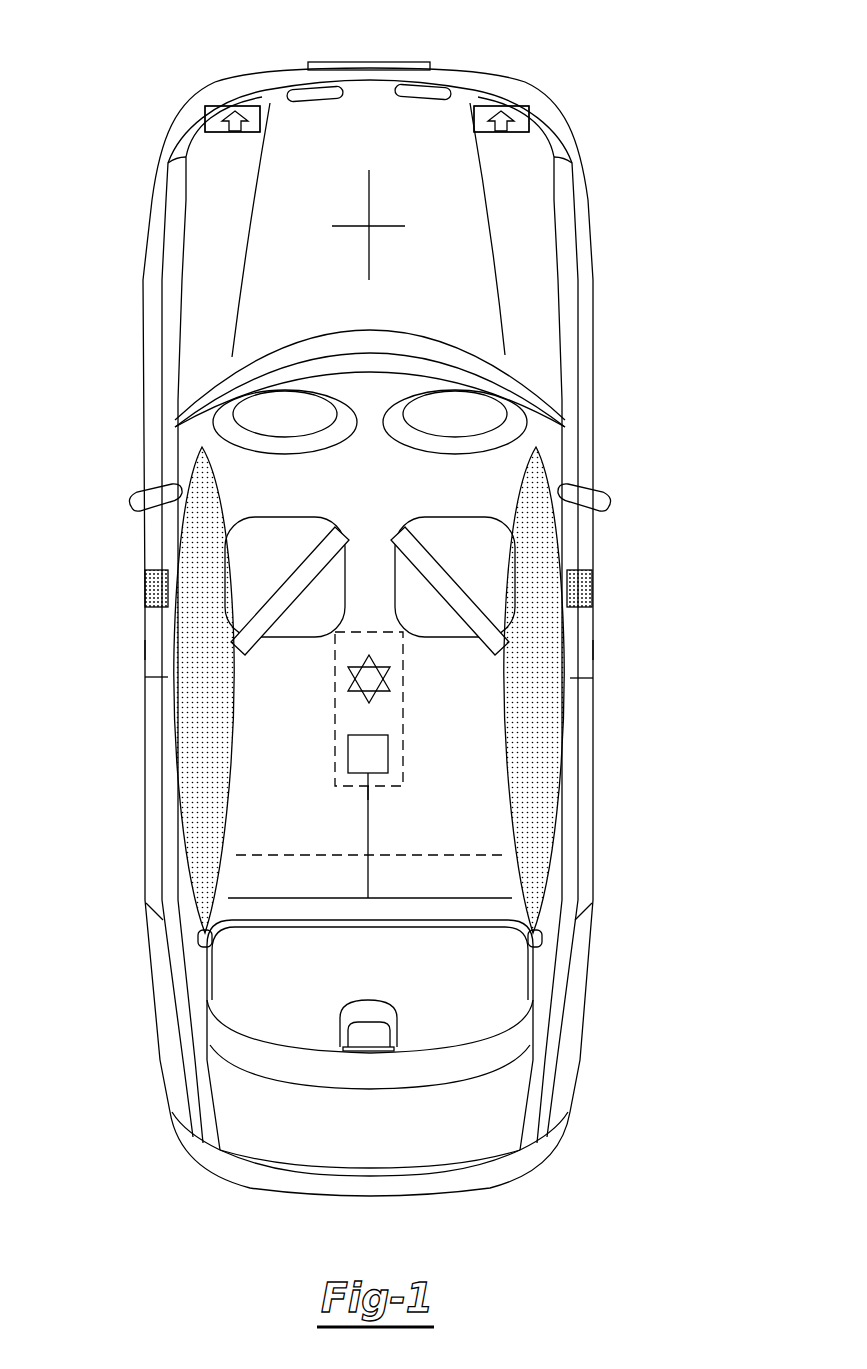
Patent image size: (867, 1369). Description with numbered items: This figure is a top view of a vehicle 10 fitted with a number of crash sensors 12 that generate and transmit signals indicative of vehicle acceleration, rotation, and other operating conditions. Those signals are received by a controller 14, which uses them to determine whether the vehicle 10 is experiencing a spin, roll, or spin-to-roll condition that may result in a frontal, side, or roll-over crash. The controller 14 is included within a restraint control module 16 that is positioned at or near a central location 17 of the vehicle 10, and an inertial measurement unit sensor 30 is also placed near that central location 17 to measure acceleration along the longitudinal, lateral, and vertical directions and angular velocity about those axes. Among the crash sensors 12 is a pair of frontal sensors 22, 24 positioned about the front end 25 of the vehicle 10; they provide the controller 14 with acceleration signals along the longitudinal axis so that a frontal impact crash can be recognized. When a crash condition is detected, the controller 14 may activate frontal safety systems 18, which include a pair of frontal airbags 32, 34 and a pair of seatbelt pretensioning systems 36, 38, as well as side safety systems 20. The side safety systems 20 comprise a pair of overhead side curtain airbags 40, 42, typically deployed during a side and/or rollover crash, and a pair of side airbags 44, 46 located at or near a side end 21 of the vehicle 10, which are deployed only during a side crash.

The vehicle 10 is at (626, 186).
The crash sensors 12 is at (245, 136).
The controller 14 is at (390, 754).
The restraint control module 16 is at (383, 787).
The central location 17 is at (363, 654).
The frontal safety systems 18 is at (370, 522).
The side safety systems 20 is at (144, 600).
The side end 21 is at (146, 638).
The frontal sensor 22 is at (219, 106).
The frontal sensor 24 is at (519, 106).
The front end 25 is at (374, 60).
The inertial measurement unit sensor 30 is at (388, 677).
The frontal airbag 32 is at (178, 437).
The frontal airbag 34 is at (562, 437).
The seatbelt pretensioning system 36 is at (281, 587).
The seatbelt pretensioning system 38 is at (459, 587).
The overhead side curtain airbag 40 is at (175, 723).
The overhead side curtain airbag 42 is at (565, 723).
The side airbag 44 is at (147, 584).
The side airbag 46 is at (592, 584).